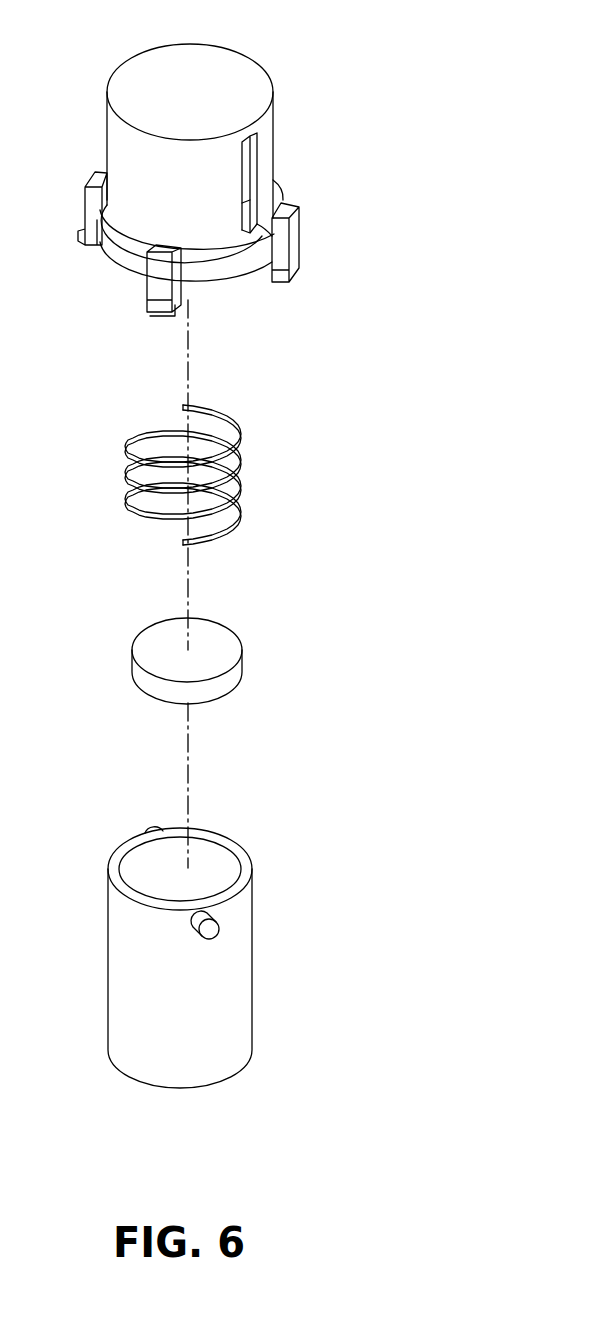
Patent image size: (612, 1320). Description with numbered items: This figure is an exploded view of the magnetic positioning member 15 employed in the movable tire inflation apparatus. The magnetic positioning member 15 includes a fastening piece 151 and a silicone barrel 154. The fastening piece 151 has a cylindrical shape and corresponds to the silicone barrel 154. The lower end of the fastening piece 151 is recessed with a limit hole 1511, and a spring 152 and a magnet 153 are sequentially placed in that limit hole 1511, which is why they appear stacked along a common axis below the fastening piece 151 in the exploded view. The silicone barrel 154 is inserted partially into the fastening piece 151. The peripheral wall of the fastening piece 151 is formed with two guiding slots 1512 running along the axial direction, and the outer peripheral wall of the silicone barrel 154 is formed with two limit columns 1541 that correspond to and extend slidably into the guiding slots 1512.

The magnetic positioning member 15 is at (243, 165).
The fastening piece 151 is at (255, 179).
The limit hole 1511 is at (250, 233).
The guiding slot 1512 is at (257, 157).
The spring 152 is at (240, 462).
The magnet 153 is at (232, 676).
The silicone barrel 154 is at (227, 957).
The limit column 1541 is at (212, 926).